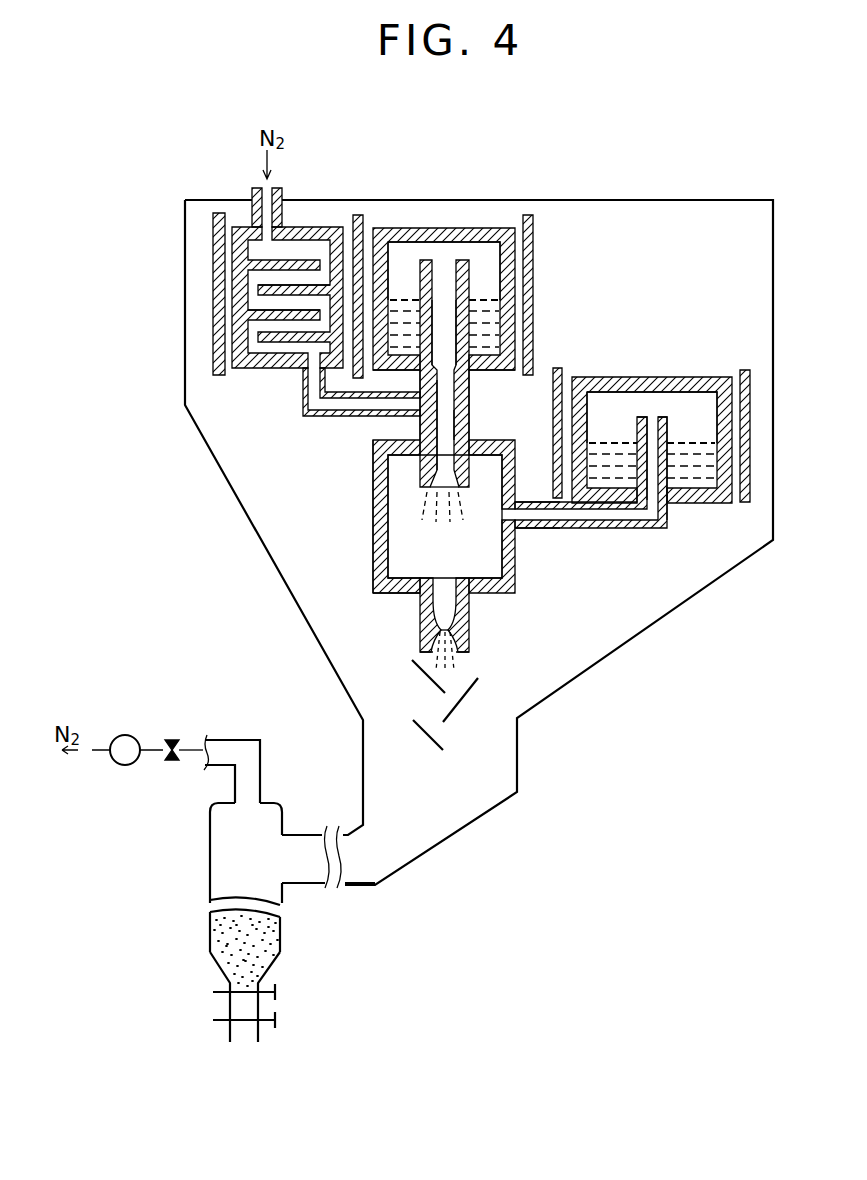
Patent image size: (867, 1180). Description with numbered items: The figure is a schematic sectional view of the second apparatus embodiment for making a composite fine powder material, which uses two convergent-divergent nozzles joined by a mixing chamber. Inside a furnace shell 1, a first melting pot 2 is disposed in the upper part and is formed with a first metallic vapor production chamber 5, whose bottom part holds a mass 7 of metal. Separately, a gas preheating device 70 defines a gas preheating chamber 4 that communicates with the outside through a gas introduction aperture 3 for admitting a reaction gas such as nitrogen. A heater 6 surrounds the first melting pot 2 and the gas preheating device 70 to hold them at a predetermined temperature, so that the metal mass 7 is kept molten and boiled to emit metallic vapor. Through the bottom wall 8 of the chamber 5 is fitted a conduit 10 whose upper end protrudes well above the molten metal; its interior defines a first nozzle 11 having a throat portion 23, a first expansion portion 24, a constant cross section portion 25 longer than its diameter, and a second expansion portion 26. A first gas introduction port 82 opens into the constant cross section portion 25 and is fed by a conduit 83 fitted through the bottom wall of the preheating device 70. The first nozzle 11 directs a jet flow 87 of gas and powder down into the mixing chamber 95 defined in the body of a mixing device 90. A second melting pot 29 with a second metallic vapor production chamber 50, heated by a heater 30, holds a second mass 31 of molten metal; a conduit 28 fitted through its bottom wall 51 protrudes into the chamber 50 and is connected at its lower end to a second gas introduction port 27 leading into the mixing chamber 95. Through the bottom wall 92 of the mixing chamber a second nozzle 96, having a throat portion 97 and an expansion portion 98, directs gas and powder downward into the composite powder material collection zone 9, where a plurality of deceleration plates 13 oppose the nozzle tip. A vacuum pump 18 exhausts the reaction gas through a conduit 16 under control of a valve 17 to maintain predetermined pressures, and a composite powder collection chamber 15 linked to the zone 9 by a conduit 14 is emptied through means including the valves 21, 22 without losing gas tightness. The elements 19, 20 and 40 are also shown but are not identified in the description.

The furnace shell 1 is at (750, 200).
The first melting pot 2 is at (444, 230).
The gas introduction aperture 3 is at (257, 190).
The gas preheating chamber 4 is at (311, 250).
The first metallic vapor production chamber 5 is at (478, 258).
The heater 6 is at (221, 213).
The mass of metal 7 is at (490, 318).
The bottom wall 8 is at (396, 360).
The composite powder material collection zone 9 is at (475, 665).
The conduit 10 is at (422, 274).
The first nozzle 11 is at (420, 432).
The deceleration plates 13 is at (458, 706).
The conduit 14 is at (310, 835).
The composite powder collection chamber 15 is at (215, 860).
The conduit 16 is at (205, 745).
The valve 17 is at (171, 740).
The vacuum pump 18 is at (125, 735).
The collector 19 is at (265, 942).
The collector funnel 20 is at (215, 958).
The valve 21 is at (277, 989).
The valve 22 is at (277, 1021).
The throat portion 23 is at (440, 362).
The first expansion portion 24 is at (470, 366).
The constant cross section portion 25 is at (462, 422).
The second expansion portion 26 is at (463, 476).
The second gas introduction port 27 is at (502, 514).
The conduit 28 is at (625, 528).
The second melting pot 29 is at (655, 378).
The heater 30 is at (556, 368).
The mass of metal 31 is at (713, 482).
The mixing chamber 40 is at (421, 578).
The second metallic vapor production chamber 50 is at (690, 400).
The bottom wall 51 is at (680, 503).
The gas preheating device 70 is at (232, 290).
The first gas introduction port 82 is at (432, 398).
The conduit 83 is at (303, 402).
The jet flow 87 is at (428, 506).
The mixing device 90 is at (514, 568).
The bottom wall 92 is at (400, 592).
The mixing chamber 95 is at (380, 522).
The second nozzle 96 is at (469, 630).
The throat portion 97 is at (428, 660).
The expansion portion 98 is at (445, 652).